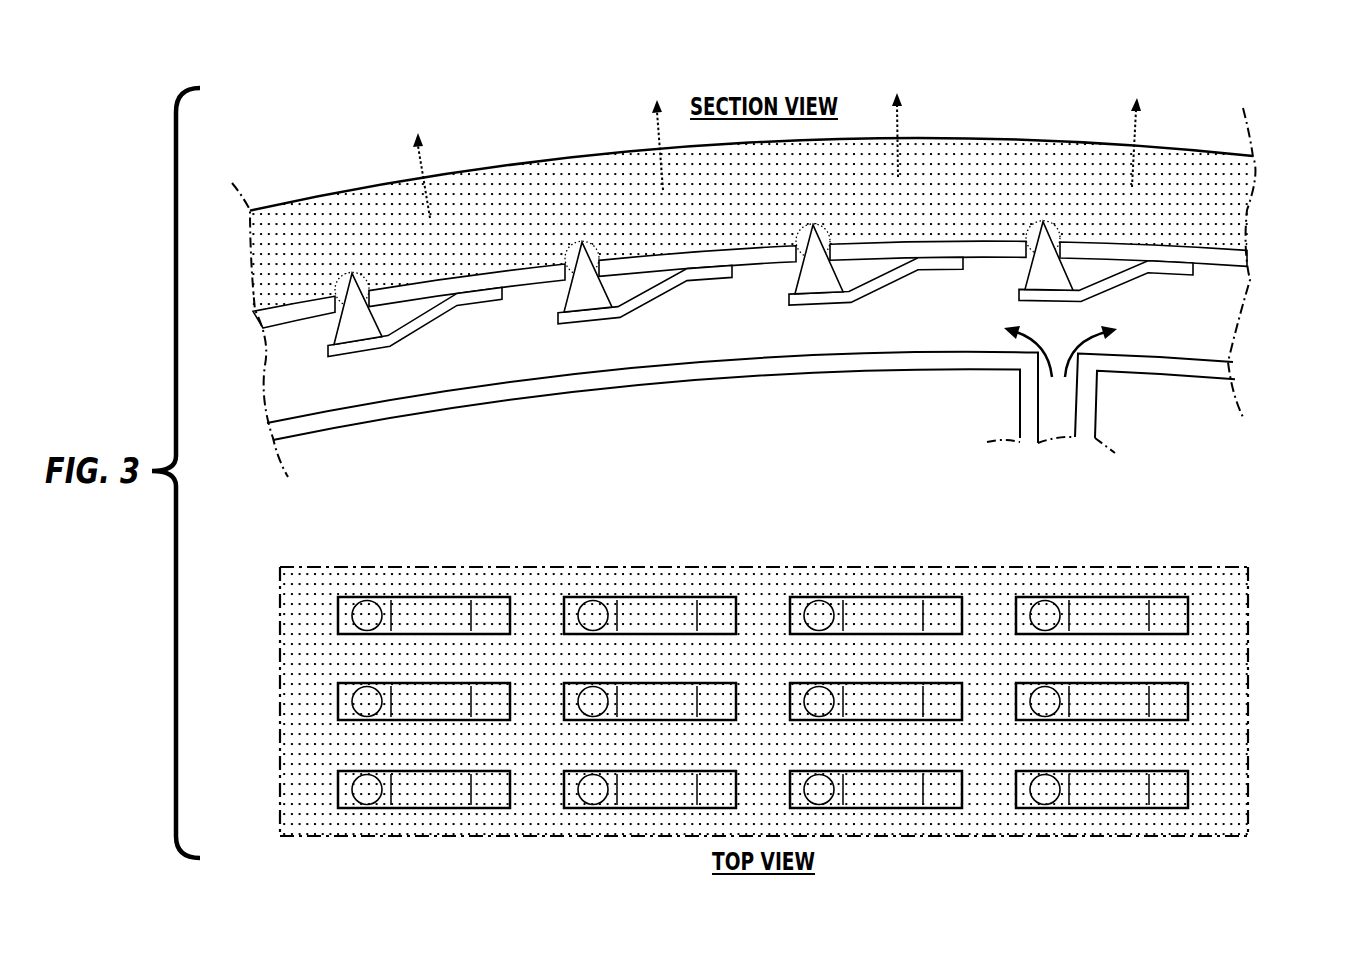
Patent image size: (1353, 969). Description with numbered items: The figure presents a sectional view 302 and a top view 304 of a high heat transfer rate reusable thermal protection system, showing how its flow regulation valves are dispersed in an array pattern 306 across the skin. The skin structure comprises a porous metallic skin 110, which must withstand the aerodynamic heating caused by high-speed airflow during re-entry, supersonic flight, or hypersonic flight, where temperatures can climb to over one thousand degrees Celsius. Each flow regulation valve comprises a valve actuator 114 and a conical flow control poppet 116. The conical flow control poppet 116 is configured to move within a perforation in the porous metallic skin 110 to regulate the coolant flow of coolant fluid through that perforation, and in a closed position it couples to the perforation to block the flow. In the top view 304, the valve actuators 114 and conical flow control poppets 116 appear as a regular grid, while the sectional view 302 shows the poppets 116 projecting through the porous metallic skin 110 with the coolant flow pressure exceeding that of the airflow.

The porous metallic skin 110 is at (310, 225).
The valve actuator 114 is at (665, 293).
The conical flow control poppet 116 is at (585, 298).
The sectional view 302 is at (1258, 234).
The top view 304 is at (1259, 706).
The array pattern 306 is at (274, 706).